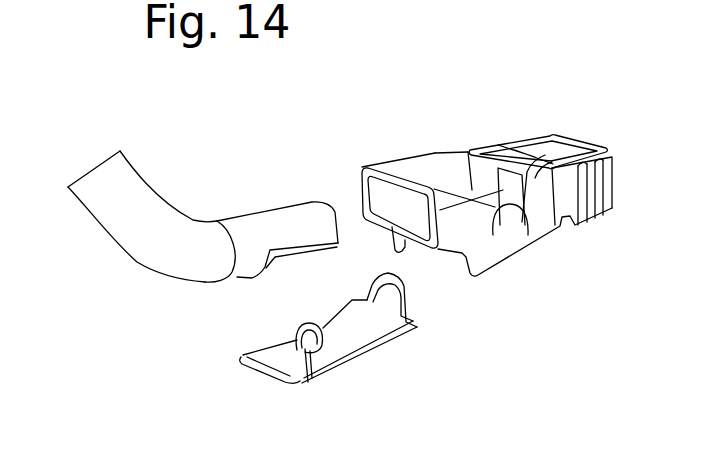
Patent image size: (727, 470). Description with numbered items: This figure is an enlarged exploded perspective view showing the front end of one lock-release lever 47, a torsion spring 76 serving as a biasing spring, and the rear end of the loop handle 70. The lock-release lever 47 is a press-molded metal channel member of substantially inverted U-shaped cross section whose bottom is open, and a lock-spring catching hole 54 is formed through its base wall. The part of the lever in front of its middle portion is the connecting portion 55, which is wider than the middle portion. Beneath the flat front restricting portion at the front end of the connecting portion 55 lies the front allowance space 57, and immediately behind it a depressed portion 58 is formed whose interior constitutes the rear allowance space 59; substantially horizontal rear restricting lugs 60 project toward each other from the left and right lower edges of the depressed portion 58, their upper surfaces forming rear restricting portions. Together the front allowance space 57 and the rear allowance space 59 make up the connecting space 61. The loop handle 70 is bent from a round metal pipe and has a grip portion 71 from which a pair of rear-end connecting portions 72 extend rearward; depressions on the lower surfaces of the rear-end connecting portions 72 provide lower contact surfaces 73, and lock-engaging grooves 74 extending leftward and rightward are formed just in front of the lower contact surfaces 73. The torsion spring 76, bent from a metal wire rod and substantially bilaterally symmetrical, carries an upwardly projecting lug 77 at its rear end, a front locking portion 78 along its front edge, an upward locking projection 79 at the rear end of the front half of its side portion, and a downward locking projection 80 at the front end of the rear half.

The lock-release lever 47 is at (543, 147).
The lock-spring catching hole 54 is at (500, 148).
The connecting portion 55 is at (562, 133).
The front allowance space 57 is at (395, 204).
The depressed portion 58 is at (573, 147).
The rear allowance space 59 is at (456, 155).
The rear restricting lugs 60 is at (538, 232).
The connecting space 61 is at (342, 102).
The loop handle 70 is at (110, 236).
The grip portion 71 is at (131, 200).
The rear-end connecting portions 72 is at (273, 222).
The lower contact surfaces 73 is at (317, 251).
The lock-engaging grooves 74 is at (242, 277).
The torsion spring 76 is at (345, 363).
The upwardly projecting lug 77 is at (390, 275).
The front locking portion 78 is at (265, 379).
The locking projection 79 is at (322, 331).
The locking projection 80 is at (305, 385).